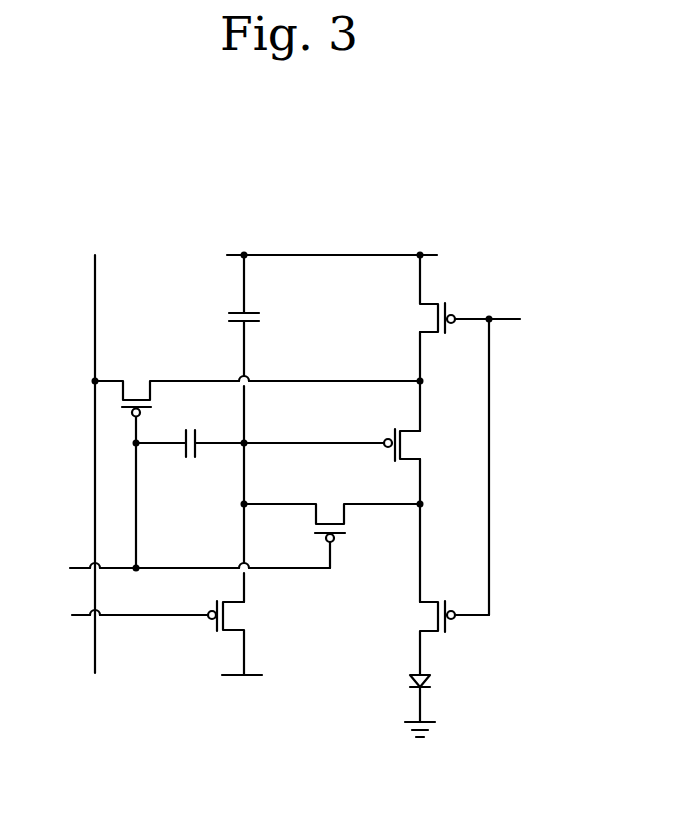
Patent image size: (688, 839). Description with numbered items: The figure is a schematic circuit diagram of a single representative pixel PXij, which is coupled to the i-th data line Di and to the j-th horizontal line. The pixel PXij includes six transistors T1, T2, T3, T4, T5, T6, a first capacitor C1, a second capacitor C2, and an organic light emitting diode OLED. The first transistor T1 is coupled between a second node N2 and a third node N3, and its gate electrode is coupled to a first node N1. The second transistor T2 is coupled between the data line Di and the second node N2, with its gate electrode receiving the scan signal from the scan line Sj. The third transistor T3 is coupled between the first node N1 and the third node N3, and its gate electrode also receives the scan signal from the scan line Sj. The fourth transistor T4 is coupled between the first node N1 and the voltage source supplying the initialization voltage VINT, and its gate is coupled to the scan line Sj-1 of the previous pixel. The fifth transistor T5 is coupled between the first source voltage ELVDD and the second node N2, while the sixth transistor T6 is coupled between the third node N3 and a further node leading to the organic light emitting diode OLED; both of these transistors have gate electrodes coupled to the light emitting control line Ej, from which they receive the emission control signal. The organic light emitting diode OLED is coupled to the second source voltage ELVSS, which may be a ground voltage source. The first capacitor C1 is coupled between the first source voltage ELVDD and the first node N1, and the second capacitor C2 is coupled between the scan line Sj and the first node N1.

The pixel PXij is at (509, 197).
The first transistor T1 is at (343, 445).
The second transistor T2 is at (256, 464).
The third transistor T3 is at (332, 525).
The fourth transistor T4 is at (238, 638).
The fifth transistor T5 is at (458, 294).
The sixth transistor T6 is at (441, 638).
The first capacitor C1 is at (256, 315).
The second capacitor C2 is at (190, 431).
The first node N1 is at (247, 443).
The second node N2 is at (424, 381).
The third node N3 is at (424, 504).
The organic light emitting diode OLED is at (447, 696).
The data line Di is at (95, 450).
The scan line Sj is at (188, 569).
The scan line Sj-1 is at (115, 615).
The light emitting control line Ej is at (516, 461).
The first source voltage ELVDD is at (332, 243).
The second source voltage ELVSS is at (418, 744).
The initialization voltage VINT is at (243, 688).